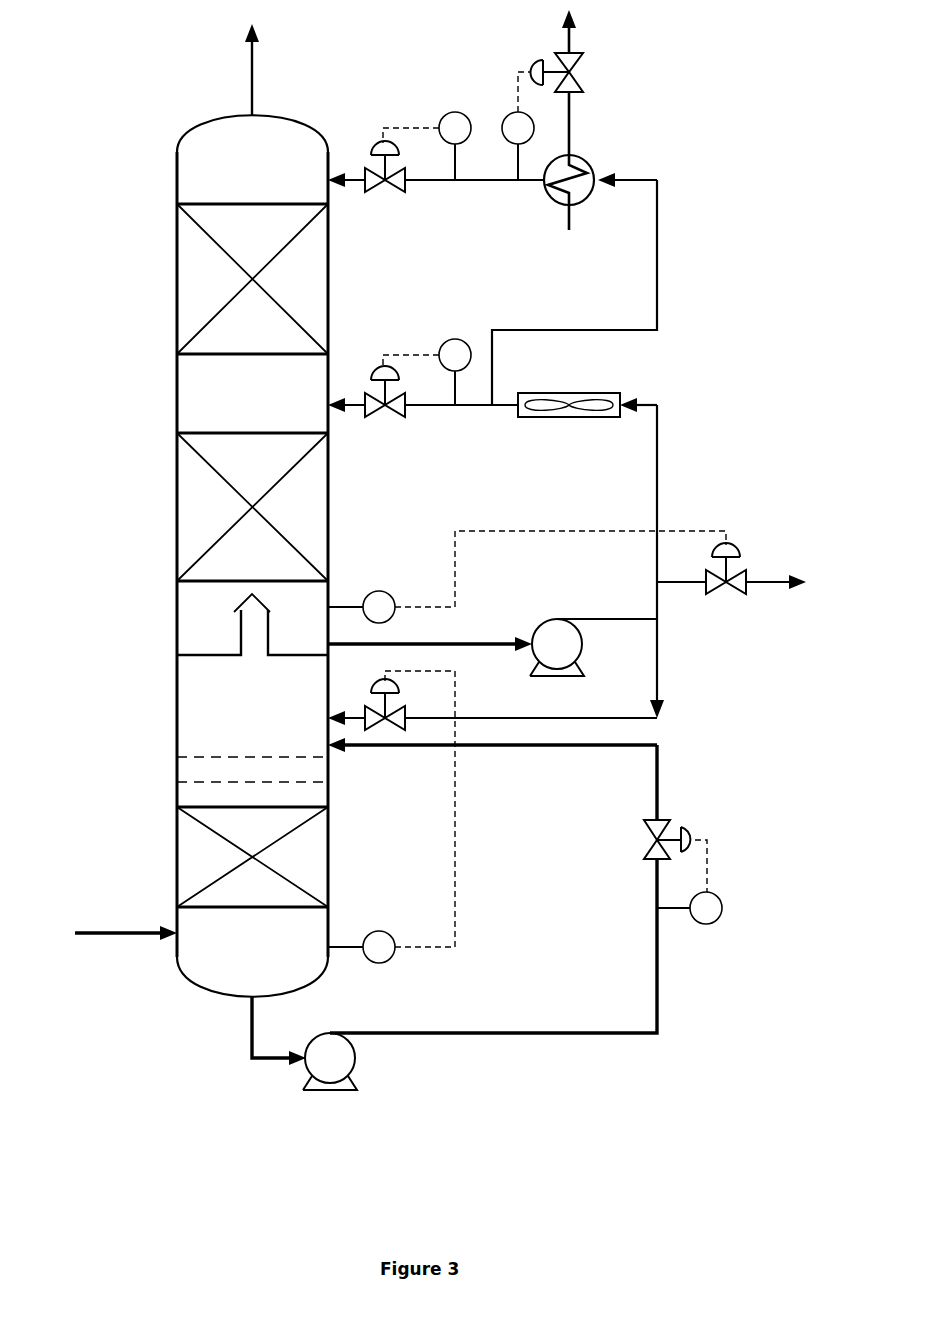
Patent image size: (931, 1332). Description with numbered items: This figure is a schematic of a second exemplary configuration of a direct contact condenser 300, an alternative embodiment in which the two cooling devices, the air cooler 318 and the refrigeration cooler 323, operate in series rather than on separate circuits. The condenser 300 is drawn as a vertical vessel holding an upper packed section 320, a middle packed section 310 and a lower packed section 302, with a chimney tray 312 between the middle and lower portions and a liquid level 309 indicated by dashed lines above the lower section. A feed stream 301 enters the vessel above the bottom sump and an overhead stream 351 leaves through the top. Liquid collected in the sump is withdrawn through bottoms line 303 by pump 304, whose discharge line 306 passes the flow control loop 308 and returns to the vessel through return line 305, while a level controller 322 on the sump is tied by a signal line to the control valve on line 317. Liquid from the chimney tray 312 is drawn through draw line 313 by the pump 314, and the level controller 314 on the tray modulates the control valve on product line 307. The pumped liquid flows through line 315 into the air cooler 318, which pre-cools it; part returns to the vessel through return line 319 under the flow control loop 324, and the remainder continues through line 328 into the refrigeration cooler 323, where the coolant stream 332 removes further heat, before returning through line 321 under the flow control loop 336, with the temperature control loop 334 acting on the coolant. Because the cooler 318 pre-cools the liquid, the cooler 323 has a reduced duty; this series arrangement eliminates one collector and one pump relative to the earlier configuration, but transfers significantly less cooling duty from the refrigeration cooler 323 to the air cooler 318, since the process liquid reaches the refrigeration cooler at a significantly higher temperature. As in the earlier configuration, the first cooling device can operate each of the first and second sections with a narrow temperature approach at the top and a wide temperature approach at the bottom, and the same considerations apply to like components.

The distillation column 300 is at (187, 128).
The overhead vapor stream 351 is at (267, 68).
The upper packed bed 320 is at (164, 201).
The middle packed bed 310 is at (164, 439).
The chimney tray 312 is at (164, 604).
The liquid level 309 is at (164, 757).
The lower packed bed 302 is at (164, 817).
The feed stream 301 is at (126, 943).
The bottoms stream 303 is at (260, 1031).
The bottoms pump 304 is at (330, 1074).
The pump discharge line 306 is at (513, 991).
The flow control valve and controller 308 is at (733, 841).
The return stream to column 305 is at (492, 758).
The recycle line with control valve 317 is at (516, 783).
The liquid draw stream 313 is at (430, 636).
The draw pump / level controller 314 is at (527, 621).
The product stream with control valve 307 is at (731, 577).
The air cooler 318 is at (677, 464).
The cooler inlet line 315 is at (640, 396).
The pumparound return line 319 is at (423, 400).
The flow controller 324 is at (470, 338).
The condenser outlet line 328 is at (677, 261).
The reflux line 321 is at (492, 166).
The reflux flow controller 336 is at (465, 108).
The temperature controller 334 is at (503, 71).
The refrigeration cooler 323 is at (584, 181).
The cooler 332 is at (577, 150).
The bottom level controller 322 is at (364, 933).